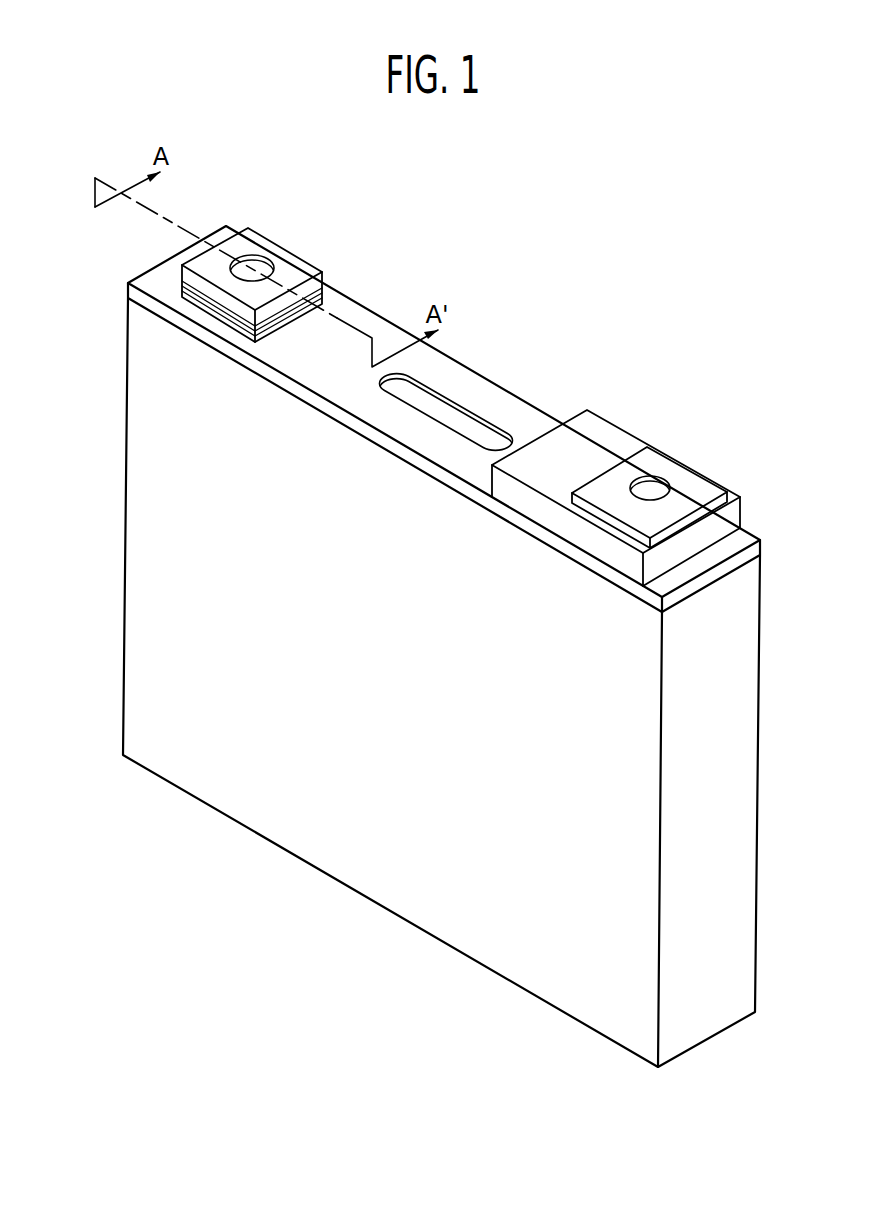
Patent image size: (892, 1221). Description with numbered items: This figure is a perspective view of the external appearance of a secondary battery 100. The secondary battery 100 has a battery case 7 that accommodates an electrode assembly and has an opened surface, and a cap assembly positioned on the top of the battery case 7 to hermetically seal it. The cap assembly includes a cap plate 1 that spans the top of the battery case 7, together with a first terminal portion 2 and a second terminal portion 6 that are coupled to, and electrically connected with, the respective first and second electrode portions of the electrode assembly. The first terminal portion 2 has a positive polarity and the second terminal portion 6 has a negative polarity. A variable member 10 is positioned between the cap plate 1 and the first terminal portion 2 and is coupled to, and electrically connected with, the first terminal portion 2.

The secondary battery 100 is at (581, 284).
The cap plate 1 is at (482, 390).
The variable member 10 is at (150, 272).
The battery case 7 is at (136, 533).
The first terminal portion 2 is at (297, 268).
The second terminal portion 6 is at (685, 477).